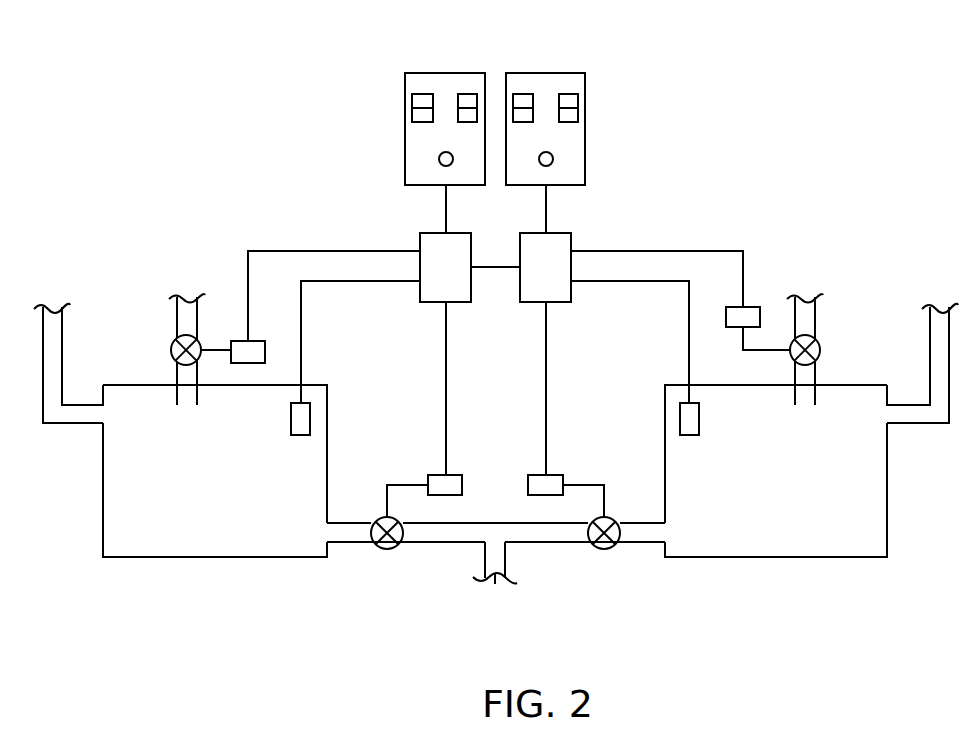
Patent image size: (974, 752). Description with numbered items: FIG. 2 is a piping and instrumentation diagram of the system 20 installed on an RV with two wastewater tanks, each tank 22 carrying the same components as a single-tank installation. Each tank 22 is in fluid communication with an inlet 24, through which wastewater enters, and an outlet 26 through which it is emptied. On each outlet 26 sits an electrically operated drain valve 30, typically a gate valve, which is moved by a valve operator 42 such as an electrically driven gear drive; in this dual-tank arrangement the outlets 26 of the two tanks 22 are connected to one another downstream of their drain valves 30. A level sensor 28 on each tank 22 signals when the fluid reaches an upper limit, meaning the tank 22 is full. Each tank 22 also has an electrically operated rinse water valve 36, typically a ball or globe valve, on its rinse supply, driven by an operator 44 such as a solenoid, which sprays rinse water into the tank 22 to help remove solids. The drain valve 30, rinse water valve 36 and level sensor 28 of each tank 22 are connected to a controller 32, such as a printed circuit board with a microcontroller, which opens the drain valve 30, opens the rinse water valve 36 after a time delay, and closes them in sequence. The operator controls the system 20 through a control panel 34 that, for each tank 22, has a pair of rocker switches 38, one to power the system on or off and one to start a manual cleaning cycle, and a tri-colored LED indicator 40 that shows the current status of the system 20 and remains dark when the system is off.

The system 20 is at (786, 137).
The wastewater tank 22 is at (103, 520).
The inlet 24 is at (54, 312).
The outlet 26 is at (421, 545).
The level sensor 28 is at (311, 418).
The drain valve 30 is at (387, 553).
The controller 32 is at (430, 243).
The control panel 34 is at (412, 130).
The rinse water valve 36 is at (170, 350).
The rocker switch 38 is at (422, 94).
The tri-colored LED indicator 40 is at (438, 159).
The valve operator 42 is at (448, 475).
The operator 44 is at (244, 340).